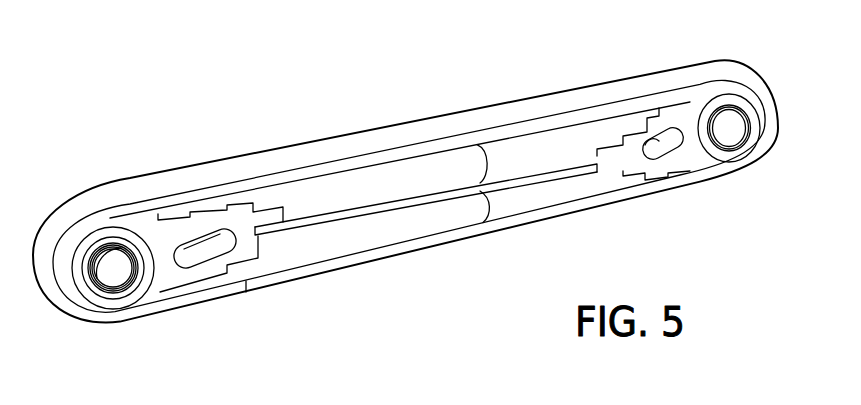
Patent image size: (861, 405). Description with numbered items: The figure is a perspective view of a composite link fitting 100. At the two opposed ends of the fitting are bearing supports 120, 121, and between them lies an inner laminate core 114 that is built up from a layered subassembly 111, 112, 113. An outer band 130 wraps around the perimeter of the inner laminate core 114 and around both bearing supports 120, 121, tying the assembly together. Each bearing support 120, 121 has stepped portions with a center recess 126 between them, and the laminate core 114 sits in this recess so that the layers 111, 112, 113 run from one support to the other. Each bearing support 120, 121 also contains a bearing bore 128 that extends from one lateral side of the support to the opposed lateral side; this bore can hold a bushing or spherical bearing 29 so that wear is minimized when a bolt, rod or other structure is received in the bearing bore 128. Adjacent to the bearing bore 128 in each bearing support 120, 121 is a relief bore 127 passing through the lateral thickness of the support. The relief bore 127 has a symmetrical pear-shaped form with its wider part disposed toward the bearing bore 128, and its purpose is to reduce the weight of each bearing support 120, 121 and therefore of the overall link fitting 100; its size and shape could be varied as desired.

The composite link fitting 100 is at (393, 124).
The layered subassembly 111 is at (585, 141).
The layered subassembly 112 is at (352, 215).
The layered subassembly 113 is at (435, 218).
The inner laminate core 114 is at (486, 186).
The bearing support 120 is at (170, 275).
The bearing support 121 is at (692, 162).
The center recess 126 is at (278, 243).
The relief bore 127 is at (205, 232).
The bearing bore 128 is at (110, 228).
The outer band 130 is at (243, 291).
The spherical bearing 29 is at (122, 274).